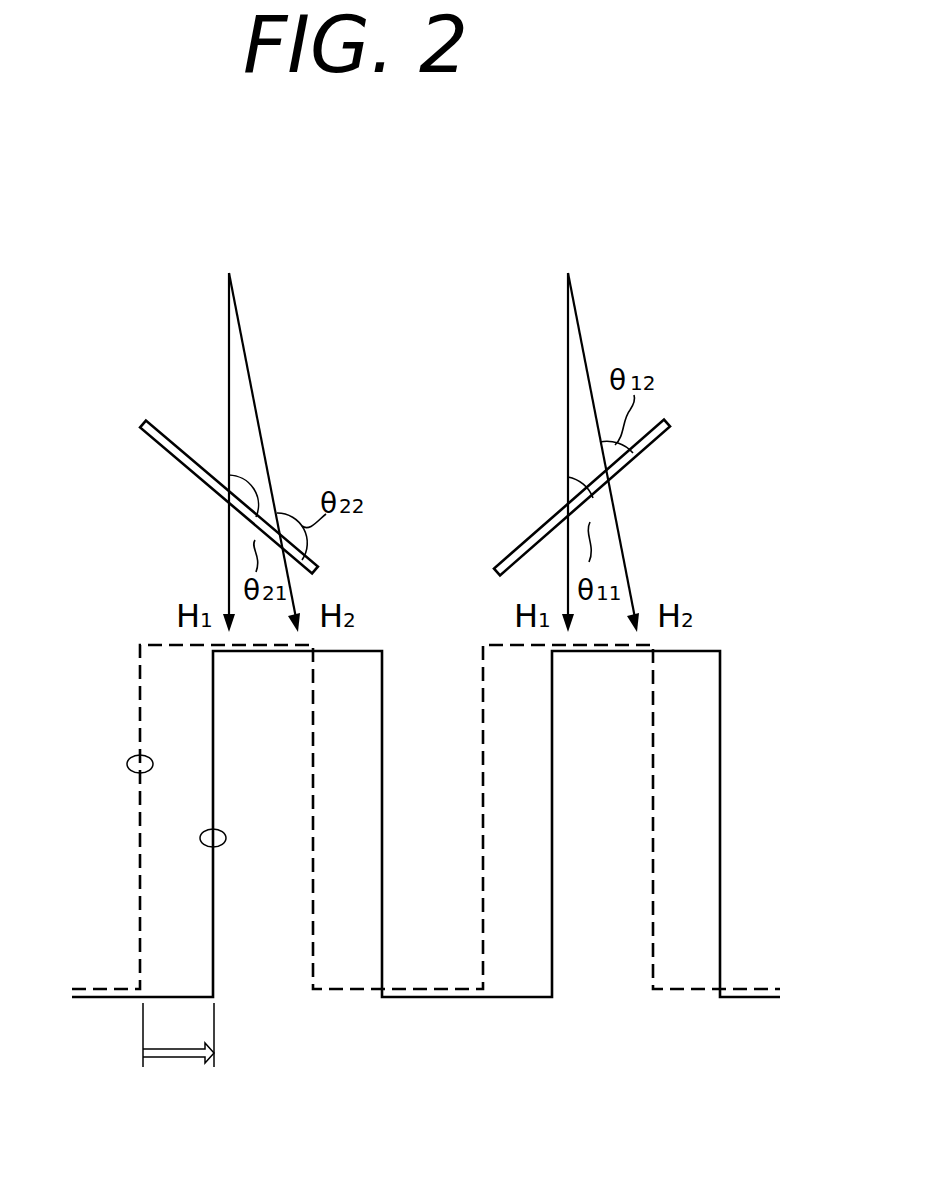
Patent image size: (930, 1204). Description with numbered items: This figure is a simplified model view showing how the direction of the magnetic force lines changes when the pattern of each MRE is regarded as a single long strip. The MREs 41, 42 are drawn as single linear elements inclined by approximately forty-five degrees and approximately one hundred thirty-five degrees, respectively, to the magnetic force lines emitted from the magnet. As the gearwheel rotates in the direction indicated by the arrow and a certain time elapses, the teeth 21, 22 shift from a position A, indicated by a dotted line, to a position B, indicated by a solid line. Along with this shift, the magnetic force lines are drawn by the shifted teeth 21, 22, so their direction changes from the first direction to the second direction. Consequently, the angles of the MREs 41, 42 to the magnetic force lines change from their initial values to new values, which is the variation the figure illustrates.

The tooth 21 is at (707, 686).
The tooth 22 is at (236, 685).
The MRE 41 is at (666, 440).
The MRE 42 is at (144, 430).
The position A is at (127, 764).
The position B is at (200, 838).